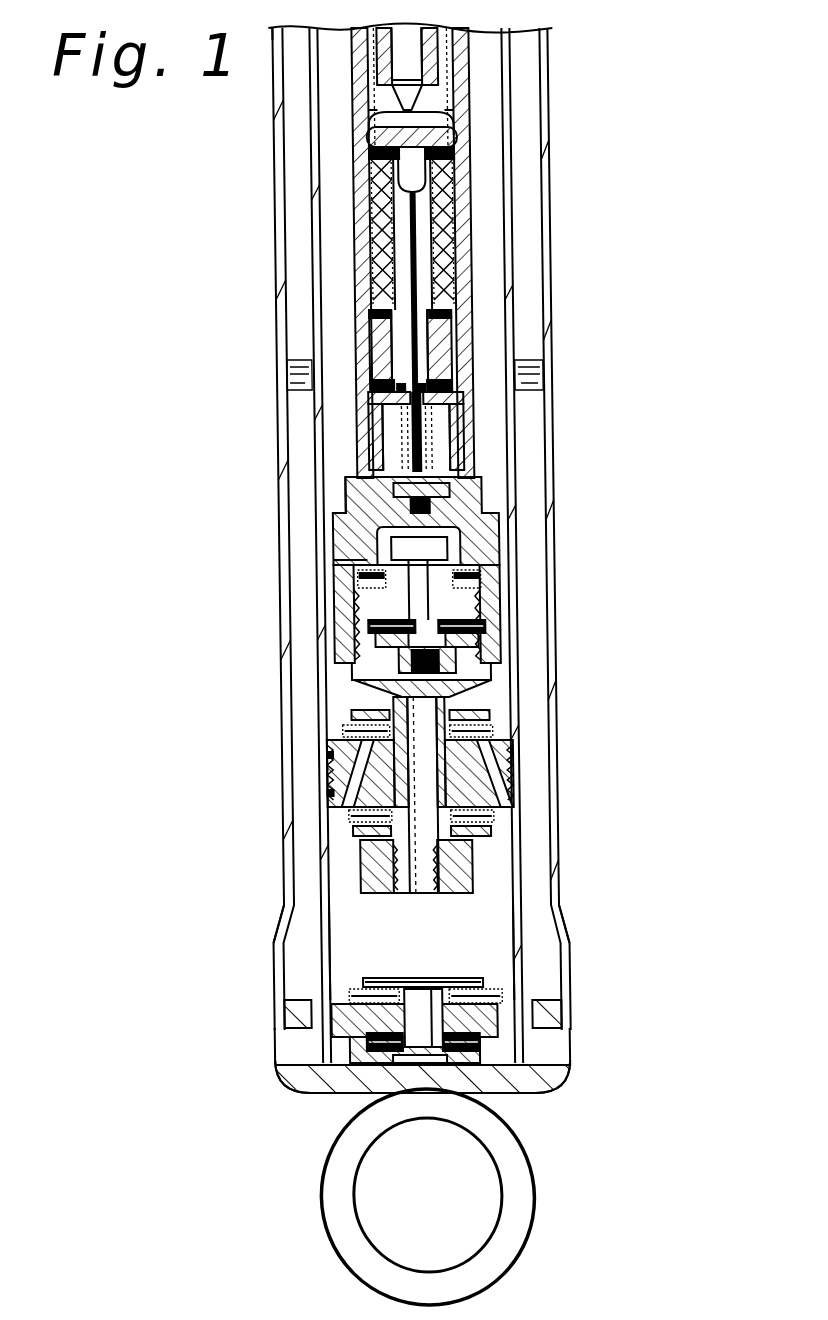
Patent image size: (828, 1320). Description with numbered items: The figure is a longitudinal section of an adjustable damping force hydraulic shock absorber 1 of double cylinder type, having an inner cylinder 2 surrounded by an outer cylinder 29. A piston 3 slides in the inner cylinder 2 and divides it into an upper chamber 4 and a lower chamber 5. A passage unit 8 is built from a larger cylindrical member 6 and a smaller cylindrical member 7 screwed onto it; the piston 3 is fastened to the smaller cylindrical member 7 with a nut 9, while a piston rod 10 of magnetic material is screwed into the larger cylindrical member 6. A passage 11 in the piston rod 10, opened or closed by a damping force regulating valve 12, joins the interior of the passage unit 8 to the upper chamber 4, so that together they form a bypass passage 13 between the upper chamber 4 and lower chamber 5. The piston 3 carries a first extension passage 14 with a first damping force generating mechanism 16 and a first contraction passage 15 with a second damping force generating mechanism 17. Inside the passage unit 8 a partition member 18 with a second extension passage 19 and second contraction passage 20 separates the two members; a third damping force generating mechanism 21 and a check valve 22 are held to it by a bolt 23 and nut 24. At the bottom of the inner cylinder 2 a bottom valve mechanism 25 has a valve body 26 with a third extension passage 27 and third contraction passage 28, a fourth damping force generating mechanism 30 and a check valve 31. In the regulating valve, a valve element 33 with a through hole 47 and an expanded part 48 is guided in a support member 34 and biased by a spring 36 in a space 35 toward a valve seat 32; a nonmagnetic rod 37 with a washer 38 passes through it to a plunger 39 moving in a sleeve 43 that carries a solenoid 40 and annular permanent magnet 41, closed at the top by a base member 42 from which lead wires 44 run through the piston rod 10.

The hydraulic shock absorber 1 is at (638, 50).
The inner cylinder 2 is at (551, 918).
The piston 3 is at (508, 778).
The upper chamber 4 is at (491, 58).
The lower chamber 5 is at (499, 940).
The larger cylindrical member 6 is at (471, 505).
The smaller cylindrical member 7 is at (459, 690).
The passage unit 8 is at (487, 652).
The nut 9 is at (467, 857).
The piston rod 10 is at (454, 80).
The passage 11 is at (456, 438).
The damping force regulating valve 12 is at (455, 225).
The bypass passage 13 is at (475, 575).
The first extension passage 14 is at (490, 752).
The first contraction passage 15 is at (316, 772).
The first damping force generating mechanism 16 is at (479, 818).
The second damping force generating mechanism 17 is at (477, 722).
The partition member 18 is at (327, 600).
The second extension passage 19 is at (462, 600).
The second contraction passage 20 is at (324, 630).
The third damping force generating mechanism 21 is at (477, 630).
The check valve 22 is at (337, 562).
The bolt 23 is at (353, 657).
The nut 24 is at (383, 678).
The bottom valve mechanism 25 is at (336, 963).
The valve body 26 is at (321, 1052).
The third extension passage 27 is at (483, 1020).
The third contraction passage 28 is at (480, 1033).
The outer cylinder 29 is at (546, 895).
The fourth damping force generating mechanism 30 is at (494, 1050).
The check valve 31 is at (487, 988).
The valve seat 32 is at (338, 535).
The valve element 33 is at (360, 455).
The support member 34 is at (364, 393).
The space 35 is at (451, 403).
The spring 36 is at (360, 418).
The rod 37 is at (392, 273).
The washer 38 is at (463, 540).
The plunger 39 is at (368, 226).
The solenoid 40 is at (368, 196).
The permanent magnet 41 is at (368, 330).
The base member 42 is at (366, 157).
The sleeve 43 is at (446, 288).
The lead wires 44 is at (368, 117).
The through hole 47 is at (380, 502).
The expanded part 48 is at (462, 475).